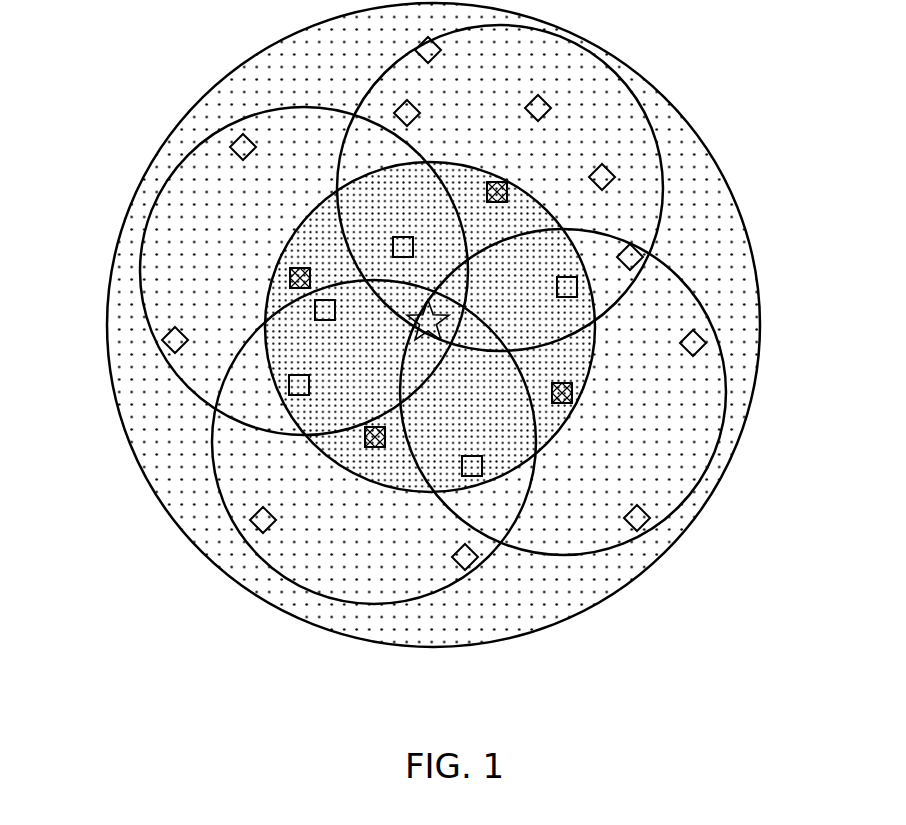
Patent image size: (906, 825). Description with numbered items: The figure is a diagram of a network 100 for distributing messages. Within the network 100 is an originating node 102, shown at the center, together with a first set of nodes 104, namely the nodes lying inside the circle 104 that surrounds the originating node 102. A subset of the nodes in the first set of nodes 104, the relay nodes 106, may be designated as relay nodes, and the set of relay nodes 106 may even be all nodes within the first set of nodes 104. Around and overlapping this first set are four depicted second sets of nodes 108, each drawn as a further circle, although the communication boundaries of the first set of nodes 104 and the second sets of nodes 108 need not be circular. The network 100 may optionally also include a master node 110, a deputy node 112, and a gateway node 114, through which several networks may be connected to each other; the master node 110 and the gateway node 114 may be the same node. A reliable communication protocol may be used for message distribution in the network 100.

The network 100 is at (106, 113).
The originating node 102 is at (441, 337).
The first set of nodes 104 is at (549, 432).
The relay nodes 106 is at (496, 182).
The second sets of nodes 108 is at (622, 78).
The master node 110 is at (557, 287).
The deputy node 112 is at (538, 121).
The gateway node 114 is at (253, 160).